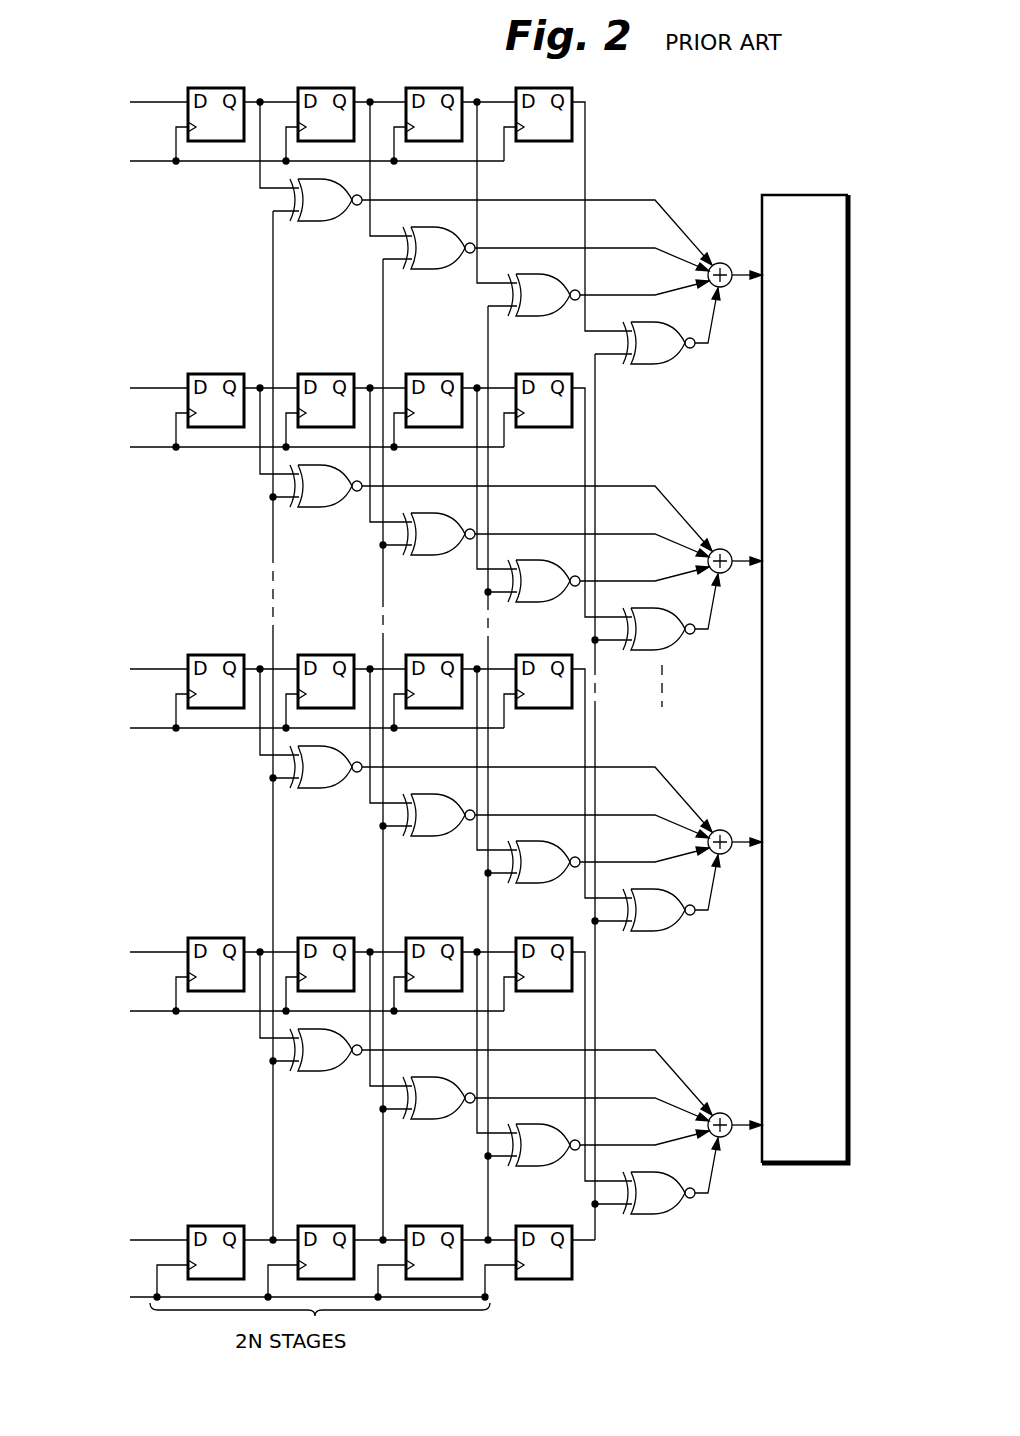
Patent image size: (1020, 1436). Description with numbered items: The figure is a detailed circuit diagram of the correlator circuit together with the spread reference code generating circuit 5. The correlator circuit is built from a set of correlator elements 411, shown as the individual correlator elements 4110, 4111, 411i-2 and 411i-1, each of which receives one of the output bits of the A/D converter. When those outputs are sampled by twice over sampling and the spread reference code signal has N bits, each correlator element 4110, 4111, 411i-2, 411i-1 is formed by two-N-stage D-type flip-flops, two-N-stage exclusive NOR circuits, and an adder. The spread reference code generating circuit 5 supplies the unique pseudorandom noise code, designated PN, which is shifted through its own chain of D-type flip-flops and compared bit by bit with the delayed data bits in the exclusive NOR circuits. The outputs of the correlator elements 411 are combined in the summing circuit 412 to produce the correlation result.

The correlator elements 411 is at (600, 80).
The correlator element 411i-1 is at (247, 240).
The correlator element 411i-2 is at (247, 526).
The correlator element 4111 is at (247, 807).
The correlator element 4110 is at (247, 1091).
The spread reference code generating circuit 5 is at (600, 1266).
The summing circuit 412 is at (794, 196).